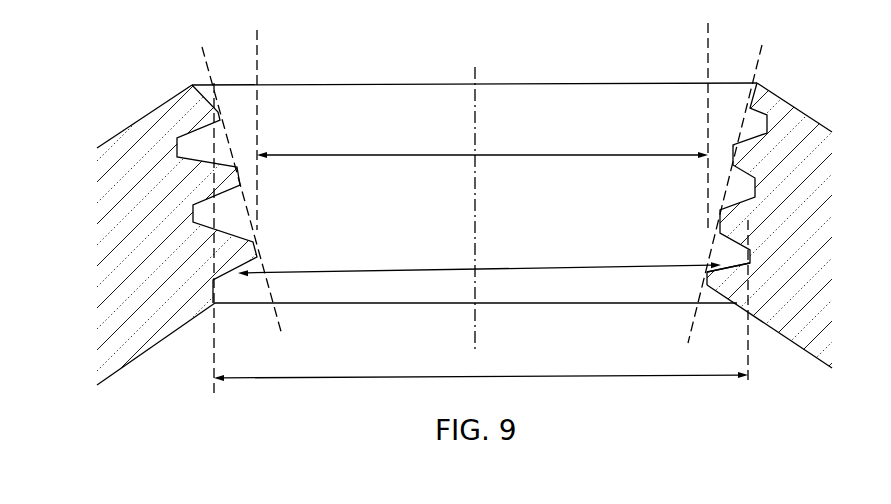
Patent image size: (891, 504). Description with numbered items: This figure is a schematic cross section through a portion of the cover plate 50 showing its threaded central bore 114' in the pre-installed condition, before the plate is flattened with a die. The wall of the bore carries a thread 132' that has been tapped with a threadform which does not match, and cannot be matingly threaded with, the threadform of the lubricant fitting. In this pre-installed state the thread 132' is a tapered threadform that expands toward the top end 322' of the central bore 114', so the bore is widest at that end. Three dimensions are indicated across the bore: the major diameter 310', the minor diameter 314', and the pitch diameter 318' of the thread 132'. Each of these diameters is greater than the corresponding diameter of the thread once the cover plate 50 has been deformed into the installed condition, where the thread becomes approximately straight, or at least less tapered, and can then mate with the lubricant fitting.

The cover plate 50 is at (817, 297).
The central bore 114' is at (476, 317).
The thread 132' is at (694, 308).
The major diameter 310' is at (481, 404).
The minor diameter 314' is at (482, 93).
The pitch diameter 318' is at (479, 245).
The top end 322' is at (474, 50).